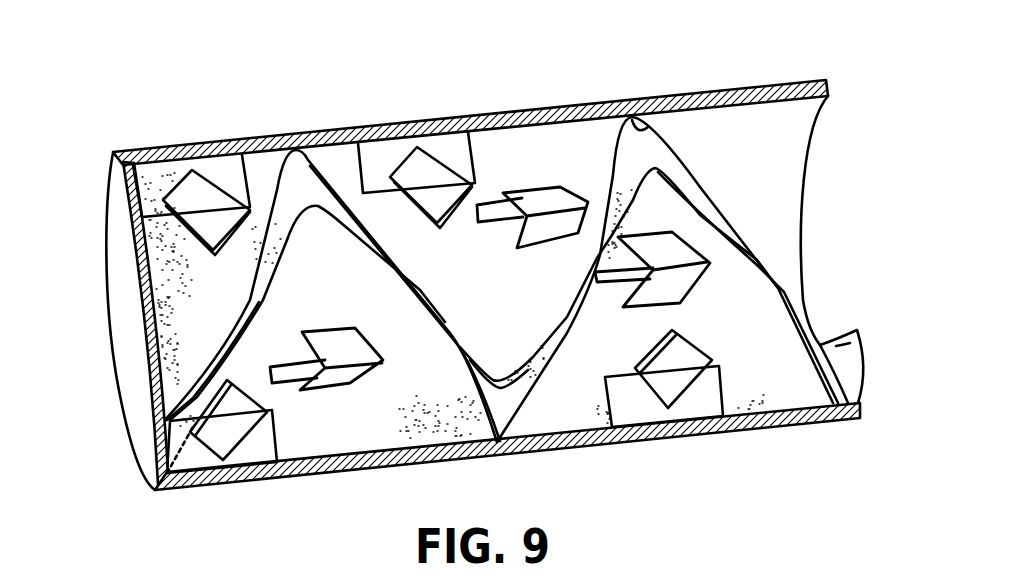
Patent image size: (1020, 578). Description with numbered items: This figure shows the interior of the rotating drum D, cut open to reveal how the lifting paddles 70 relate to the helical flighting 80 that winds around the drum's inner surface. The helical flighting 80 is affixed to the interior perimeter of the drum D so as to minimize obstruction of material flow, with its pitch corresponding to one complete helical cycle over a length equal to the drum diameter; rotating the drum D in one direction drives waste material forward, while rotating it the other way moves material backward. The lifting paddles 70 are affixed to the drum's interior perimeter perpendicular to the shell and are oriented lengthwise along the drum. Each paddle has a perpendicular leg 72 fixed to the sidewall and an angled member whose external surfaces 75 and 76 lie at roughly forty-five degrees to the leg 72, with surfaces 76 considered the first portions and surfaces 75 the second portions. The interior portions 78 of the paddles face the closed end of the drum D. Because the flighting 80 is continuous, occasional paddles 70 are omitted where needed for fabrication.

The lifting paddle 70 is at (225, 168).
The perpendicular leg 72 is at (373, 150).
The external surface of angled member 75 is at (185, 177).
The external surface of angled member 76 is at (230, 447).
The interior portion of lifting paddle 78 is at (543, 200).
The helical flighting 80 is at (638, 126).
The drum D is at (307, 137).